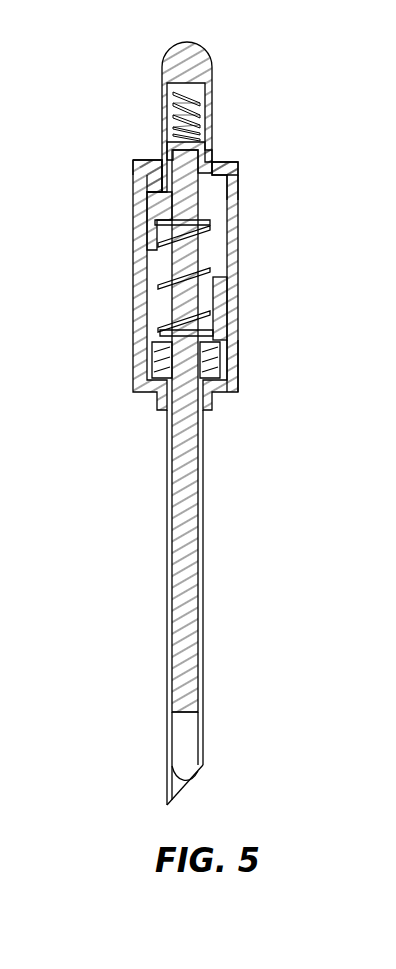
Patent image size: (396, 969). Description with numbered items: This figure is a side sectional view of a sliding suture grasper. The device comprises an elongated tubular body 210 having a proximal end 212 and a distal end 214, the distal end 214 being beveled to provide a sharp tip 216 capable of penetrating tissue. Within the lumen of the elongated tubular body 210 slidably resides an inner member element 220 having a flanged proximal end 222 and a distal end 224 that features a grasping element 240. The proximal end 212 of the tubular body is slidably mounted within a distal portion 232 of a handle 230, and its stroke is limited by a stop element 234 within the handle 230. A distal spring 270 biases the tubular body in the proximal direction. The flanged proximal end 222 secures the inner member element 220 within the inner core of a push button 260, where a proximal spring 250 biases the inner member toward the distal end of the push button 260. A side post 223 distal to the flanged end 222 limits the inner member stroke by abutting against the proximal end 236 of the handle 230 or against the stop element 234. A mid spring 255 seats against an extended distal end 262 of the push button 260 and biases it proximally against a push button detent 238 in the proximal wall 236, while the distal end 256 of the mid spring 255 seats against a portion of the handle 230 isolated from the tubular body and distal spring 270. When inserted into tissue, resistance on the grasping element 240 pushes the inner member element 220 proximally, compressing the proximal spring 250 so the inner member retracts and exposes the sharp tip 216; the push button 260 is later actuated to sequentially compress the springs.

The elongated tubular body 210 is at (202, 550).
The proximal end of the elongated tubular body 212 is at (218, 348).
The distal end of the elongated tubular body 214 is at (203, 738).
The sharp tip 216 is at (172, 802).
The inner member element 220 is at (185, 486).
The proximal end of the inner member element 222 is at (202, 138).
The side post 223 is at (238, 184).
The distal end of the inner member element 224 is at (185, 710).
The handle 230 is at (134, 268).
The distal portion of the handle 232 is at (226, 370).
The stop element 234 is at (221, 293).
The proximal end of the handle 236 is at (228, 160).
The push button detent 238 is at (147, 160).
The grasping element 240 is at (195, 773).
The proximal spring 250 is at (198, 95).
The mid spring 255 is at (213, 223).
The distal end of the mid spring 256 is at (207, 332).
The push button 260 is at (193, 60).
The extended distal end of the push button 262 is at (148, 215).
The distal spring 270 is at (148, 377).